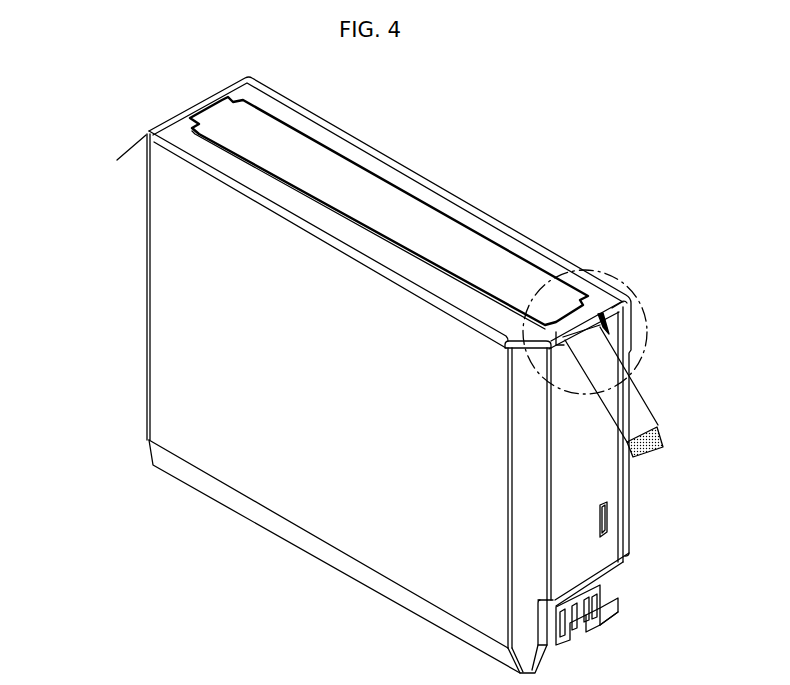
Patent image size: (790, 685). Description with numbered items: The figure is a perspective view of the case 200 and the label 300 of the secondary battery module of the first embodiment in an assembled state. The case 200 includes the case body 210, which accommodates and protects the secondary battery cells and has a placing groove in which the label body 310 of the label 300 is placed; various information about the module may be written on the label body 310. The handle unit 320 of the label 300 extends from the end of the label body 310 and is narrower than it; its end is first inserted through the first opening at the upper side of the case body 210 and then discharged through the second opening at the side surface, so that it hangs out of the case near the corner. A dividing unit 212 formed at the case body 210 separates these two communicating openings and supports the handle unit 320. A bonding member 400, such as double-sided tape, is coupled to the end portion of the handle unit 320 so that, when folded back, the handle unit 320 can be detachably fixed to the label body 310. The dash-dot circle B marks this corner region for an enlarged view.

The case 200 is at (103, 371).
The case body 210 is at (168, 220).
The dividing unit 212 is at (630, 318).
The label 300 is at (494, 159).
The label body 310 is at (422, 228).
The handle unit 320 is at (633, 408).
The bonding member 400 is at (657, 430).
The detail region B is at (617, 278).